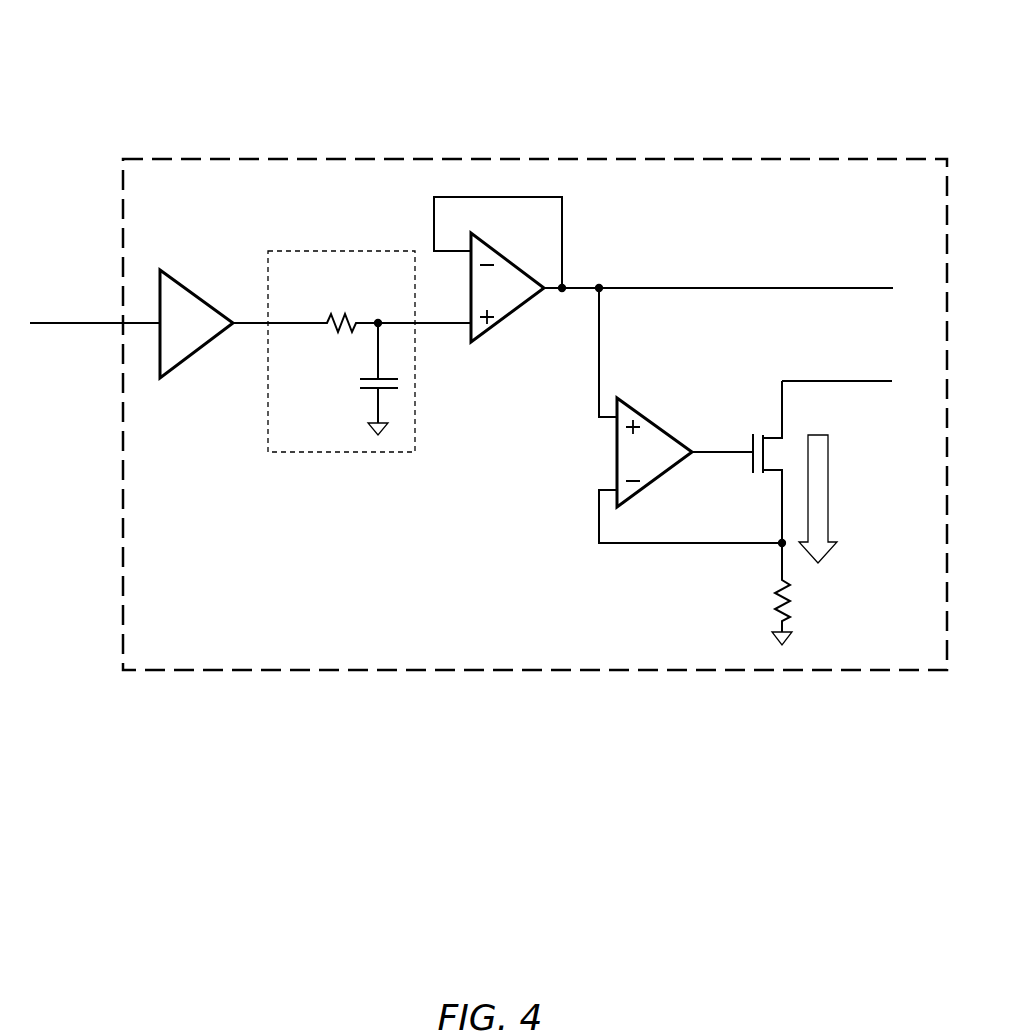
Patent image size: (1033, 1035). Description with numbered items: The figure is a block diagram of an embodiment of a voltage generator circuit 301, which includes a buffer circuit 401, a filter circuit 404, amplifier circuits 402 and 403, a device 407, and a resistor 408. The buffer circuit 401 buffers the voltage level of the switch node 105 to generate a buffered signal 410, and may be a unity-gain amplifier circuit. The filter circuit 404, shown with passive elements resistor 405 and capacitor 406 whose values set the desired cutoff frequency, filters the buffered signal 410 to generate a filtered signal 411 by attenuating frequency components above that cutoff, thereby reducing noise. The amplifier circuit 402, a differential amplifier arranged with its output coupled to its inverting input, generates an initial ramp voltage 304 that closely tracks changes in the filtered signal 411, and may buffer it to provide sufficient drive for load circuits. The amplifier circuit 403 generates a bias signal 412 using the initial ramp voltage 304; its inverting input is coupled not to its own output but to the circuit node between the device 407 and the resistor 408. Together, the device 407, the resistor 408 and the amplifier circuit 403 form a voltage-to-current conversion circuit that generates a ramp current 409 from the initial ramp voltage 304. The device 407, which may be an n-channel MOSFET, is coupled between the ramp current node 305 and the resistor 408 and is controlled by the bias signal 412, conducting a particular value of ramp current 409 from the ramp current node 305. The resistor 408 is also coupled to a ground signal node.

The voltage generator circuit 301 is at (514, 158).
The switch node 105 is at (95, 313).
The initial ramp voltage 304 is at (718, 273).
The ramp current node 305 is at (818, 368).
The buffer circuit 401 is at (200, 352).
The amplifier circuit 402 is at (512, 318).
The amplifier circuit 403 is at (656, 412).
The filter circuit 404 is at (358, 452).
The resistor 405 is at (344, 316).
The capacitor 406 is at (361, 385).
The device 407 is at (759, 478).
The resistor 408 is at (772, 598).
The ramp current 409 is at (829, 487).
The buffered signal 410 is at (248, 322).
The filtered signal 411 is at (436, 325).
The bias signal 412 is at (705, 455).